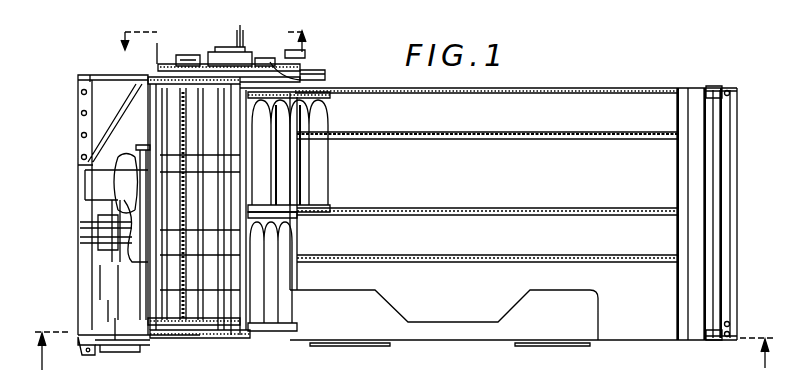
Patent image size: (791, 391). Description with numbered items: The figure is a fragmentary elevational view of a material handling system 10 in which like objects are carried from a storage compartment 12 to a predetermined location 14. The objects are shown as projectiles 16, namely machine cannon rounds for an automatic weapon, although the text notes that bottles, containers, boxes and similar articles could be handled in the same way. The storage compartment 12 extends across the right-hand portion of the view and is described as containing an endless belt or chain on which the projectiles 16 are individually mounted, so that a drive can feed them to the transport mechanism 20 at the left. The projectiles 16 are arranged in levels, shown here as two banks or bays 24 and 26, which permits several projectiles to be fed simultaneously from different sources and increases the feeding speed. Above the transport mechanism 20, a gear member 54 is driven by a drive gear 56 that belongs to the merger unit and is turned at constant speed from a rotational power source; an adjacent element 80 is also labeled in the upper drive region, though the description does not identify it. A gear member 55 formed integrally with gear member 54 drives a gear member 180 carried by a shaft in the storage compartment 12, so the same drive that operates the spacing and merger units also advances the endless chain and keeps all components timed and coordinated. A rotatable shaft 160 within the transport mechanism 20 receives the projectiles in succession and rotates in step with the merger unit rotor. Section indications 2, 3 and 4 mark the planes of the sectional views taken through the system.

The material handling system 10 is at (382, 78).
The storage compartment 12 is at (590, 107).
The predetermined location 14 is at (104, 183).
The projectiles 16 is at (320, 115).
The transport mechanism 20 is at (208, 42).
The projectile bank or bay 24 is at (275, 177).
The projectile bank or bay 26 is at (292, 240).
The gear member 54 is at (280, 64).
The gear member 55 is at (308, 46).
The drive gear 56 is at (206, 64).
The bearing block 80 is at (264, 58).
The rotatable shaft 160 is at (147, 318).
The gear member 180 is at (322, 78).
The section line 2- 2 is at (405, 361).
The section line 3- 3 is at (198, 44).
The section line 4- 4 is at (210, 53).